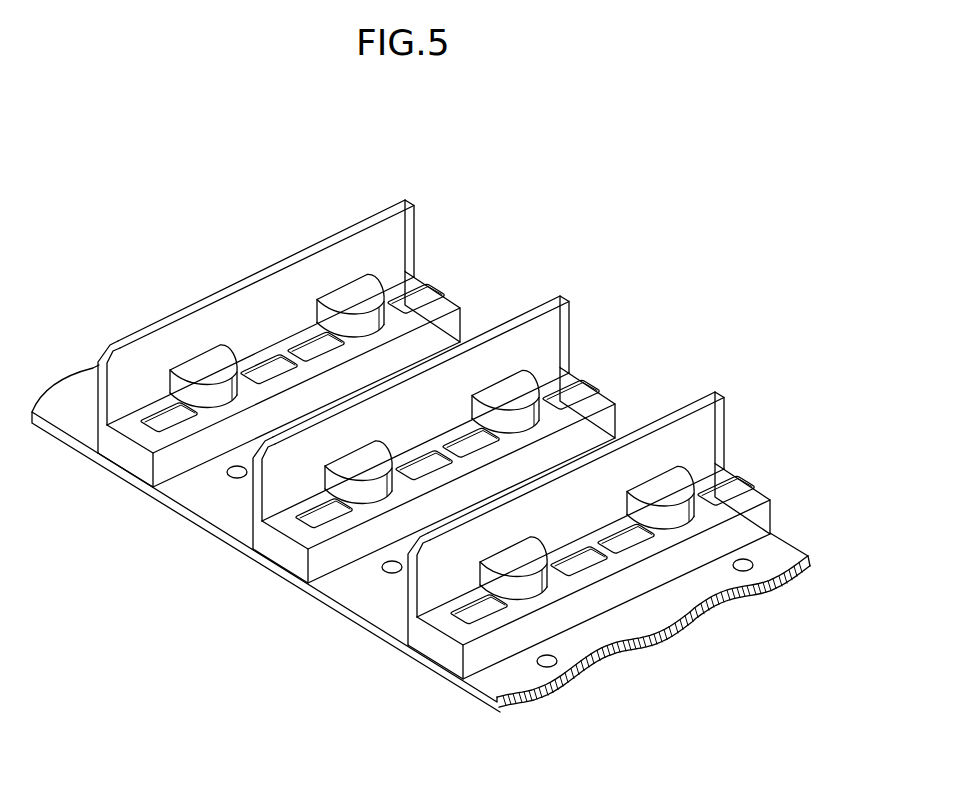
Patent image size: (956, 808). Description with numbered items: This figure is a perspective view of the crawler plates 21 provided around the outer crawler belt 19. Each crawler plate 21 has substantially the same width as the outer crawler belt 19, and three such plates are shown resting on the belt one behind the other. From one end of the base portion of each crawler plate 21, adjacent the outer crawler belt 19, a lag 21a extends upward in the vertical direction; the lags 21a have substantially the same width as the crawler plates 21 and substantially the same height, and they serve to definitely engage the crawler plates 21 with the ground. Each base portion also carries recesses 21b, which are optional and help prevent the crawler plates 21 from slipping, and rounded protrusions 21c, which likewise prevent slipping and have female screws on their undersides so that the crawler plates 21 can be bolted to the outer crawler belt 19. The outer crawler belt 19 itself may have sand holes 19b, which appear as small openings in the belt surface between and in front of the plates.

The outer crawler belt 19 is at (637, 617).
The sand holes 19b is at (227, 472).
The crawler plates 21 is at (494, 372).
The lags 21a is at (567, 307).
The recesses 21b is at (597, 387).
The protrusions 21c is at (664, 480).